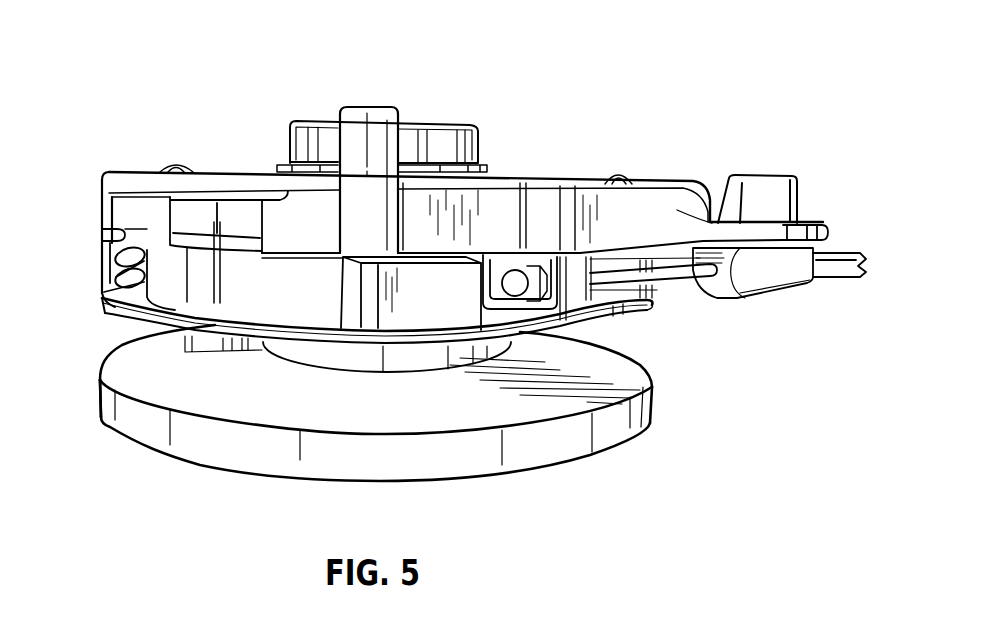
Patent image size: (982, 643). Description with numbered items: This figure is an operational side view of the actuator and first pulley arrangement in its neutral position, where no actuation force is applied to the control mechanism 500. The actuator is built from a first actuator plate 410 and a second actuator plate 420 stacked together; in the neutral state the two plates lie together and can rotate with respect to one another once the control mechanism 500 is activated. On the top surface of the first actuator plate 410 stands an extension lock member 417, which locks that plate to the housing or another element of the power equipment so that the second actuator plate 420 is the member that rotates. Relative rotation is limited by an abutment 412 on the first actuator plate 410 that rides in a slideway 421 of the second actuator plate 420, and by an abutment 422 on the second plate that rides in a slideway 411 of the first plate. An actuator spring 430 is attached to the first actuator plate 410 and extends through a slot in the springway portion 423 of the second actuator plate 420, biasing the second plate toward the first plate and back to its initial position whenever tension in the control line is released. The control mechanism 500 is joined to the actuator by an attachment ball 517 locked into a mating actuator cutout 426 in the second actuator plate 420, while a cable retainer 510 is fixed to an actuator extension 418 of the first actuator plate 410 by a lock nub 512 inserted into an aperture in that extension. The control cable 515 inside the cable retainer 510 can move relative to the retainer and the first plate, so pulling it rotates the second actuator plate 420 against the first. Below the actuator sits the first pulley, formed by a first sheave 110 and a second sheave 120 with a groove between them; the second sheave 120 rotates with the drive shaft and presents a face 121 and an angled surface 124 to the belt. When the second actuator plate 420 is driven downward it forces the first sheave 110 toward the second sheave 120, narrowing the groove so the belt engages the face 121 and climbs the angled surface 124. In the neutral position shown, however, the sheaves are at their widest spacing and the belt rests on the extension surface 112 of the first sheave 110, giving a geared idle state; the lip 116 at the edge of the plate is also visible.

The first sheave 110 is at (130, 327).
The extension surface 112 is at (330, 353).
The lip 116 is at (107, 310).
The second sheave 120 is at (573, 447).
The face 121 is at (470, 413).
The angled surface 124 is at (400, 400).
The first actuator plate 410 is at (233, 172).
The slideway 411 is at (223, 200).
The abutment 412 is at (303, 217).
The extension lock member 417 is at (367, 107).
The actuator extension 418 is at (817, 223).
The second actuator plate 420 is at (257, 297).
The slideway 421 is at (220, 263).
The abutment 422 is at (133, 210).
The springway portion 423 is at (117, 230).
The actuator cutout 426 is at (573, 287).
The actuator spring 430 is at (105, 293).
The control mechanism 500 is at (840, 277).
The cable retainer 510 is at (763, 293).
The lock nub 512 is at (790, 187).
The control cable 515 is at (678, 279).
The attachment ball 517 is at (517, 293).